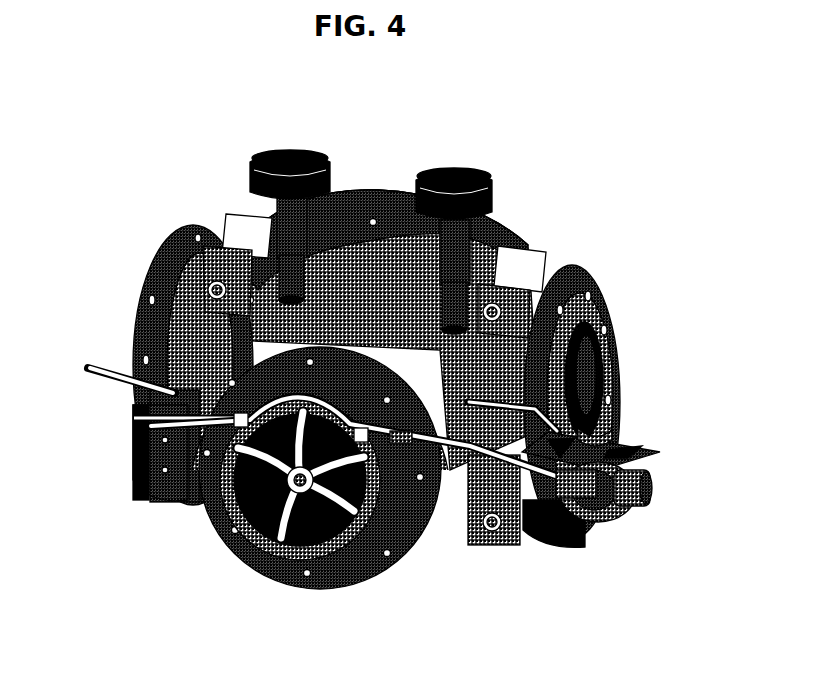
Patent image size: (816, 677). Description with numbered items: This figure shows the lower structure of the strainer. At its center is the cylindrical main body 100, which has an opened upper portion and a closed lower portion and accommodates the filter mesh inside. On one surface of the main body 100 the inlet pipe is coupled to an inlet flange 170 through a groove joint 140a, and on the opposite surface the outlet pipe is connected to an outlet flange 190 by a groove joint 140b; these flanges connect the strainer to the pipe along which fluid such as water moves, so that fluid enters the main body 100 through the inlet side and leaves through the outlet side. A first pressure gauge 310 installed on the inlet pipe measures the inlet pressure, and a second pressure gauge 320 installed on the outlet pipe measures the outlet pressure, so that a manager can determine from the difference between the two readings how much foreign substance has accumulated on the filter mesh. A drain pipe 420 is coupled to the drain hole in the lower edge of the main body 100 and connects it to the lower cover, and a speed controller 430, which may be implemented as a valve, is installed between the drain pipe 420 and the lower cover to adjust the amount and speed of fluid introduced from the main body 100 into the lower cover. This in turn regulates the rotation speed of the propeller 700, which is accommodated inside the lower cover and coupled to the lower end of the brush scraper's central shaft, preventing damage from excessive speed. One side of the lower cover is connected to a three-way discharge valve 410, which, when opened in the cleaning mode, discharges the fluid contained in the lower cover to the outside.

The main body 100 is at (365, 275).
The groove joint 140a is at (228, 230).
The groove joint 140b is at (522, 268).
The inlet flange 170 is at (162, 257).
The outlet flange 190 is at (605, 298).
The first pressure gauge 310 is at (290, 150).
The second pressure gauge 320 is at (452, 165).
The 3-way discharge valve 410 is at (608, 472).
The drain pipe 420 is at (173, 503).
The speed controller 430 is at (160, 418).
The propeller 700 is at (335, 512).